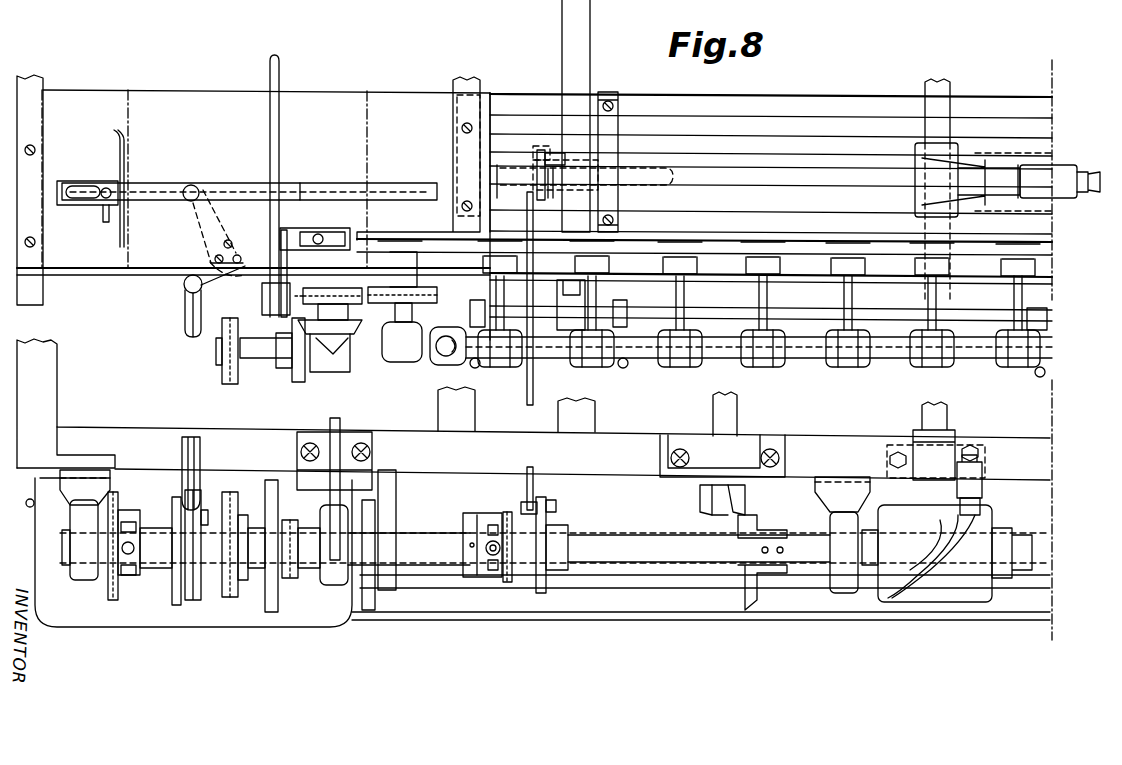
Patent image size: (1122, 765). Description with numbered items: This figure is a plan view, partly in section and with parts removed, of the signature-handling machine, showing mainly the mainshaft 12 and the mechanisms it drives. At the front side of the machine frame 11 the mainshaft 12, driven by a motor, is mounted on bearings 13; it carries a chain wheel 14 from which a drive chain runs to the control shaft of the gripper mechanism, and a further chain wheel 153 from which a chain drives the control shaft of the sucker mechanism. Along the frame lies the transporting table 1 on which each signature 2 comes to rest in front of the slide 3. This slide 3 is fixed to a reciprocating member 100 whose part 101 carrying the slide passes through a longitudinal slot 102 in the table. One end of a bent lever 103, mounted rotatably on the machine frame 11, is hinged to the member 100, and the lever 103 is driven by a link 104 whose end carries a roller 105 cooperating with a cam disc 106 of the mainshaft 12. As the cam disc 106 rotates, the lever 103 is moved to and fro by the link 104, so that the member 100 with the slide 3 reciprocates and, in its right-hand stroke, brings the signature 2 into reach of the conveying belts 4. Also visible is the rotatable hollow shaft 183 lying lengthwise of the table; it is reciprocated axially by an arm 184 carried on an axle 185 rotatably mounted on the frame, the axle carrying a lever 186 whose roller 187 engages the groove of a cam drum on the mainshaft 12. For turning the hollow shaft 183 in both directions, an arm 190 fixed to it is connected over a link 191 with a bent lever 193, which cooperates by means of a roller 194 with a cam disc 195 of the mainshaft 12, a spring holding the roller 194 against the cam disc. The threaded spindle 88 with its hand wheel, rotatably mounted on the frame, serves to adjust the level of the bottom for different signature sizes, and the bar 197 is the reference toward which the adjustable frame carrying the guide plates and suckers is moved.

The transporting table 1 is at (76, 103).
The signature 2 is at (369, 133).
The slide 3 is at (126, 142).
The conveying belts 4 is at (458, 242).
The machine frame 11 is at (38, 292).
The mainshaft 12 is at (422, 540).
The bearings 13 is at (86, 580).
The chain wheel 14 is at (113, 596).
The threaded spindle 88 is at (947, 604).
The reciprocating member 100 is at (301, 185).
The part carrying the slide 101 is at (62, 181).
The longitudinal slot 102 is at (397, 185).
The bent lever 103 is at (190, 229).
The link 104 is at (184, 303).
The roller 105 is at (204, 500).
The cam disc 106 is at (195, 580).
The chain wheel 153 is at (505, 515).
The hollow shaft 183 is at (800, 190).
The arm 184 is at (960, 170).
The axle 185 is at (925, 92).
The lever 186 is at (975, 488).
The roller 187 is at (980, 512).
The arm 190 is at (556, 158).
The link 191 is at (538, 158).
The bent lever 193 is at (527, 470).
The roller 194 is at (556, 506).
The cam disc 195 is at (544, 590).
The bar 197 is at (120, 274).